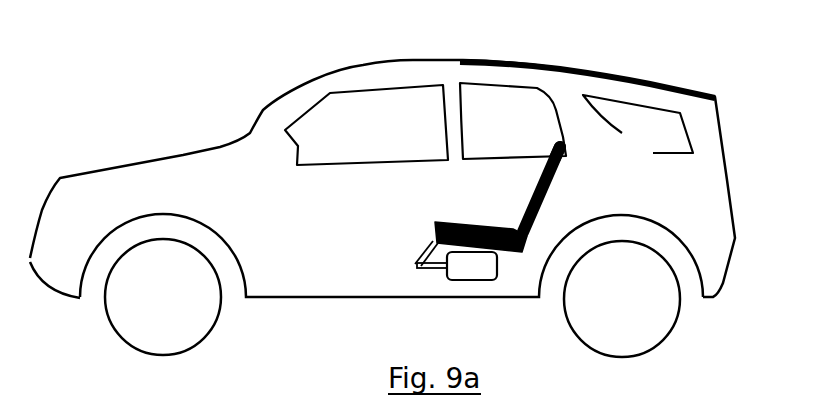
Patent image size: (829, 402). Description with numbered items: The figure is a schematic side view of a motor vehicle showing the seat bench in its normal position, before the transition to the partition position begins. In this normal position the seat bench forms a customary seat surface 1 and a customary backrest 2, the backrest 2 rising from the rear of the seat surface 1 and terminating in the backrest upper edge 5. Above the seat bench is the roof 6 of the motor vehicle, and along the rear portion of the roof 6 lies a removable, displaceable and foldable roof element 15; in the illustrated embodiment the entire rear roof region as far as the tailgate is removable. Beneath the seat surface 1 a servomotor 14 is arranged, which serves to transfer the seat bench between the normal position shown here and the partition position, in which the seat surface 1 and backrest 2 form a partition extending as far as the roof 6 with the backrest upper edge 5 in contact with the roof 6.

The seat surface 1 is at (463, 222).
The backrest 2 is at (550, 182).
The backrest upper edge 5 is at (560, 137).
The roof 6 is at (392, 60).
The servomotor 14 is at (482, 278).
The roof element 15 is at (570, 65).